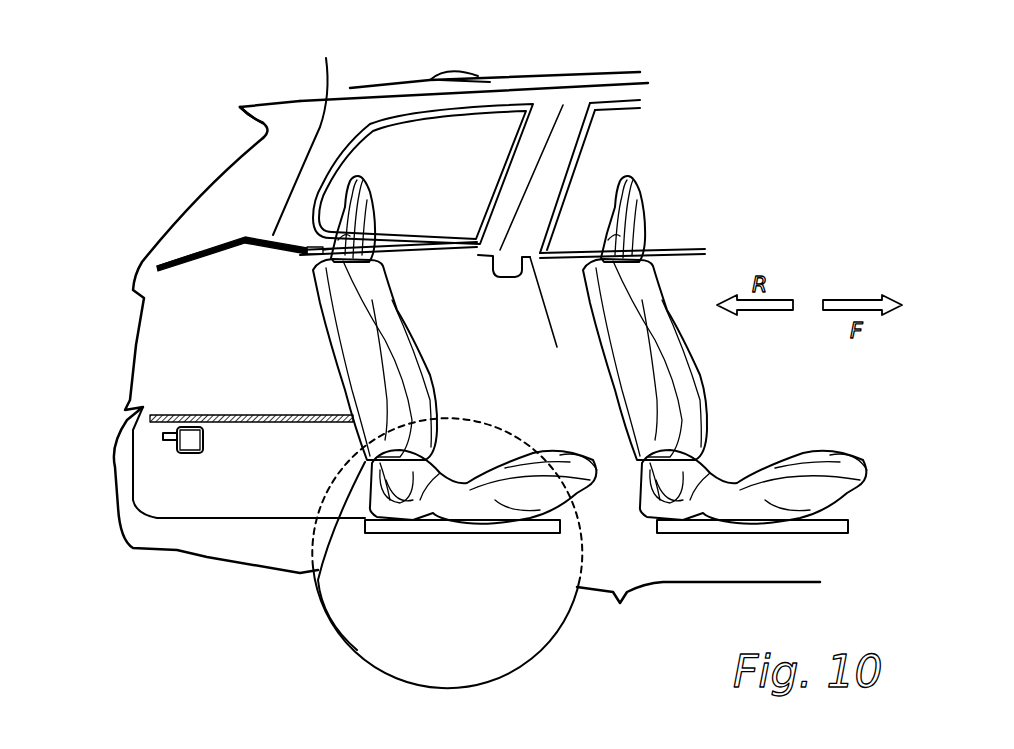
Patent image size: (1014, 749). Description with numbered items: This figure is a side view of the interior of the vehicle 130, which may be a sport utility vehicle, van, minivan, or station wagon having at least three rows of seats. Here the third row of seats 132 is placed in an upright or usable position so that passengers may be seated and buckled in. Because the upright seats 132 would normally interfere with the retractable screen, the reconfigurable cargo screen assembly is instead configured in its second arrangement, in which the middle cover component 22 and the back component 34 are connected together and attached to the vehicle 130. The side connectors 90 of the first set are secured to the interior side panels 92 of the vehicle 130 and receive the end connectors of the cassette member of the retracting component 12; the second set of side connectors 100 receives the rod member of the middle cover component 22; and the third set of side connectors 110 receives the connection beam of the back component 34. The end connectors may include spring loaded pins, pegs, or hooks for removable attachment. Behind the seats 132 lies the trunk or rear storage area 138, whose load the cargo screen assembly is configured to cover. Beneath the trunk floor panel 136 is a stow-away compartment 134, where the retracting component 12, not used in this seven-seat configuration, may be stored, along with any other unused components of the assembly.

The retracting component 12 is at (188, 447).
The middle cover component 22 is at (301, 132).
The back component 34 is at (187, 250).
The side connector 90 is at (505, 272).
The interior side panel 92 is at (437, 277).
The side connector 100 is at (318, 262).
The side connector 110 is at (236, 242).
The vehicle 130 is at (120, 58).
The third row of seats 132 is at (328, 603).
The stow-away compartment 134 is at (290, 440).
The trunk floor panel 136 is at (200, 417).
The rear storage area 138 is at (175, 333).